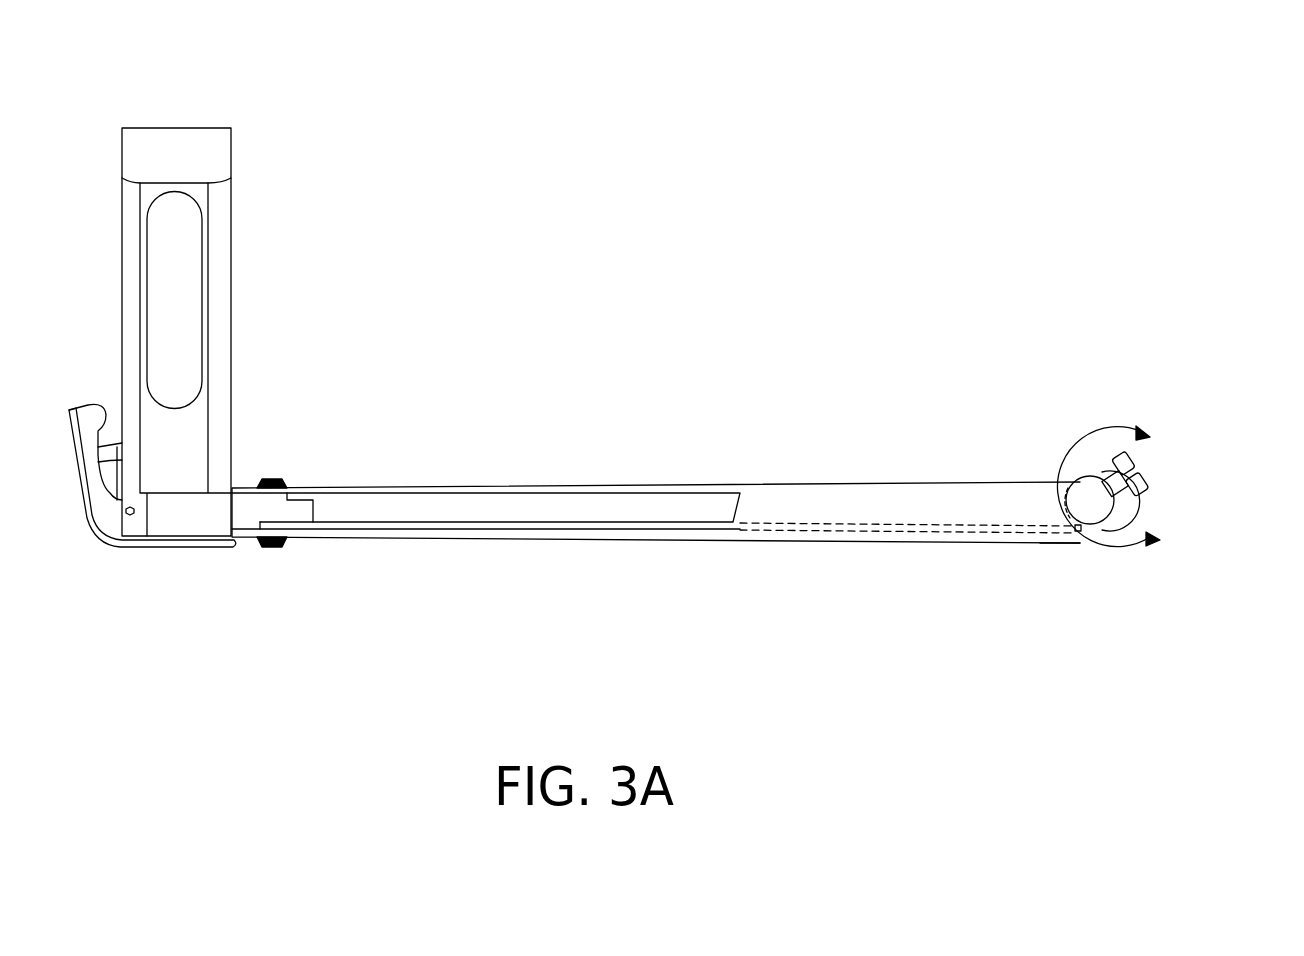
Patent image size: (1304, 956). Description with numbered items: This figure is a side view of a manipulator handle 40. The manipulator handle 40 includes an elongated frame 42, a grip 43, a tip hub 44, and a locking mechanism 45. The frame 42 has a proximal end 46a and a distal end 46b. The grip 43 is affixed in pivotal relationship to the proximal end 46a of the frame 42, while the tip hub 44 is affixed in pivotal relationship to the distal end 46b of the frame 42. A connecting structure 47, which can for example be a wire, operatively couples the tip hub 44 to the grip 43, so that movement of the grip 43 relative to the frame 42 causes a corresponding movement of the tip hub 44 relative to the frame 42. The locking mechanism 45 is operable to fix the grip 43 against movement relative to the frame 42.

The manipulator handle 40 is at (727, 358).
The elongated frame 42 is at (463, 487).
The grip 43 is at (205, 144).
The tip hub 44 is at (1160, 493).
The locking mechanism 45 is at (85, 403).
The proximal end 46a is at (258, 542).
The distal end 46b is at (1097, 560).
The connecting structure 47 is at (370, 522).